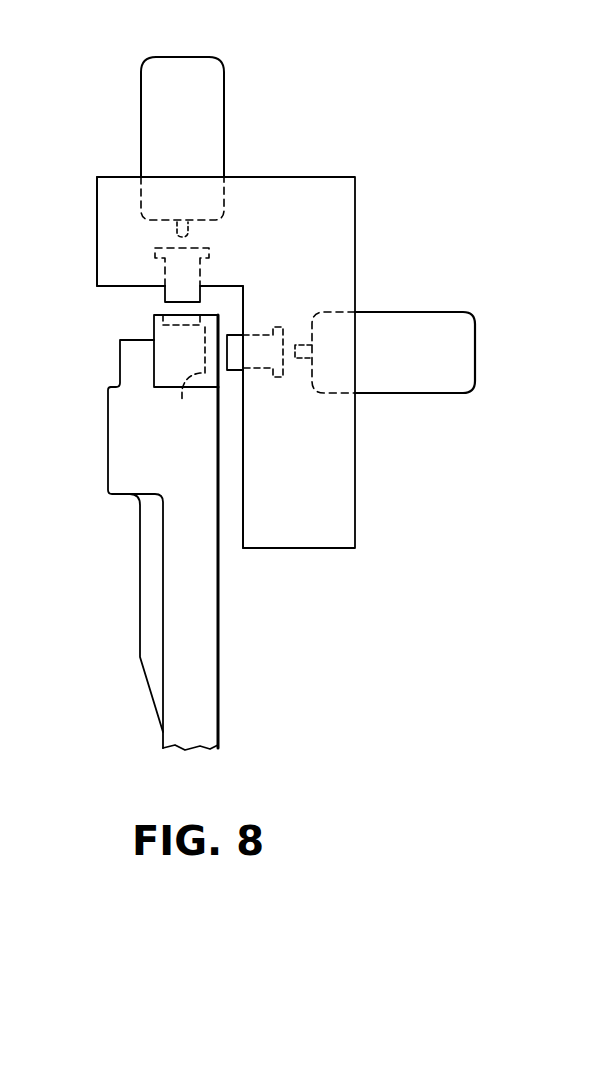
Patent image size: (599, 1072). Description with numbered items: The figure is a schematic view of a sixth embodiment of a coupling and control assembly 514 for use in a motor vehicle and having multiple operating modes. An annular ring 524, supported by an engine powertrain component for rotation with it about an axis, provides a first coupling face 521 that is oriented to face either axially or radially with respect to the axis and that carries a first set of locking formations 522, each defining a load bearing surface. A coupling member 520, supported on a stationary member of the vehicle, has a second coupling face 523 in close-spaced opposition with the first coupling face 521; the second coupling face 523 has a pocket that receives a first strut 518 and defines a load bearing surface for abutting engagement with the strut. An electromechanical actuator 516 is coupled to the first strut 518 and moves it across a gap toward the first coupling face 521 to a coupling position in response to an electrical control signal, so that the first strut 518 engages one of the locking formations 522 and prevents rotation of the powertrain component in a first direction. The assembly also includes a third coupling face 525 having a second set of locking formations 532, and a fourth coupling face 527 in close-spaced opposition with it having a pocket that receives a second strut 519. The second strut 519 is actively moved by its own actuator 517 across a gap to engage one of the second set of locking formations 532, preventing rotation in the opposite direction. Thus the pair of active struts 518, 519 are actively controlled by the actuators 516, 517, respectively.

The coupling and control assembly 514 is at (345, 72).
The electromechanical actuator 516 is at (378, 312).
The actuator 517 is at (224, 131).
The first strut 518 is at (262, 336).
The second strut 519 is at (163, 274).
The coupling member 520 is at (355, 528).
The first coupling face 521 is at (218, 606).
The first set of locking formations 522 is at (182, 400).
The second coupling face 523 is at (233, 492).
The annular ring 524 is at (153, 316).
The third coupling face 525 is at (128, 340).
The fourth coupling face 527 is at (110, 288).
The second set of locking formations 532 is at (176, 318).